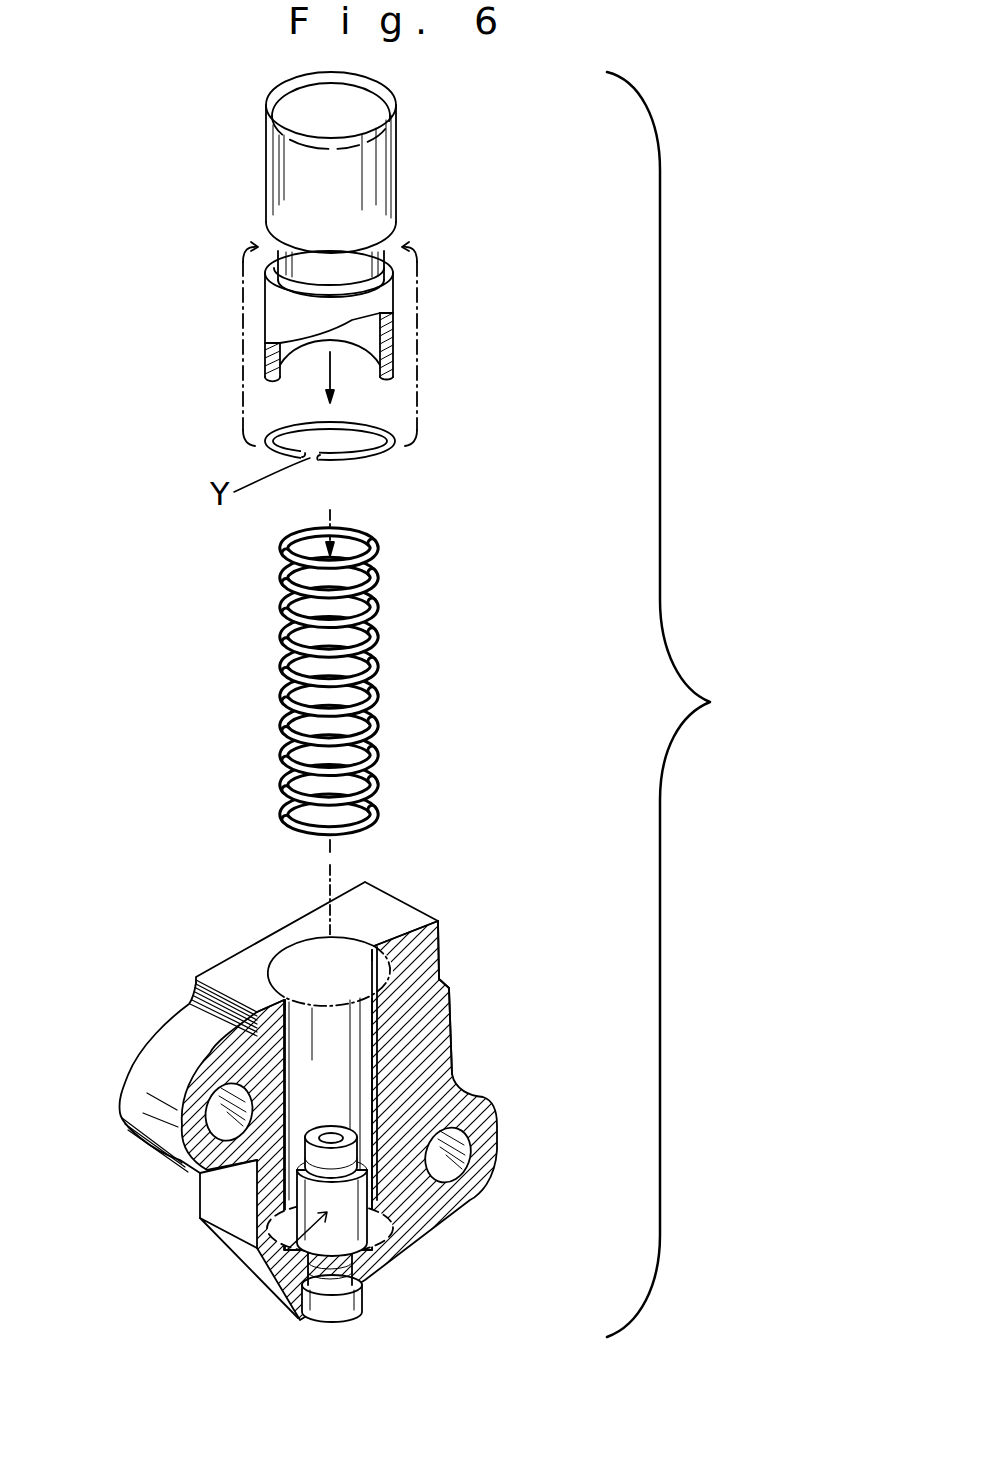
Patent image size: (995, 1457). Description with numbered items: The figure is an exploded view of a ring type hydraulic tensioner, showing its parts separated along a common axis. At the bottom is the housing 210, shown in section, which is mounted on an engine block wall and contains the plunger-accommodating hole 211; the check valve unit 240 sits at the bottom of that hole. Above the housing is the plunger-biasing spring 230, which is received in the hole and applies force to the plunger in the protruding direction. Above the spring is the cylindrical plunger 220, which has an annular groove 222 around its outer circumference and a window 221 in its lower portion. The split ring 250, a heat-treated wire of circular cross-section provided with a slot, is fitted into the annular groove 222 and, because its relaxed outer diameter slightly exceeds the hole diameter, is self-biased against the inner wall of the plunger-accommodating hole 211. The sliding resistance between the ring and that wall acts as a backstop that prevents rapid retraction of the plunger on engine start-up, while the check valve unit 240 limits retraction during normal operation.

The housing 210 is at (377, 1102).
The plunger-accommodating hole 211 is at (320, 955).
The cylindrical plunger 220 is at (351, 259).
The window of plunger 221 is at (277, 349).
The annular groove 222 is at (314, 272).
The plunger-biasing spring 230 is at (426, 682).
The check valve unit 240 is at (283, 1247).
The split ring 250 is at (452, 433).